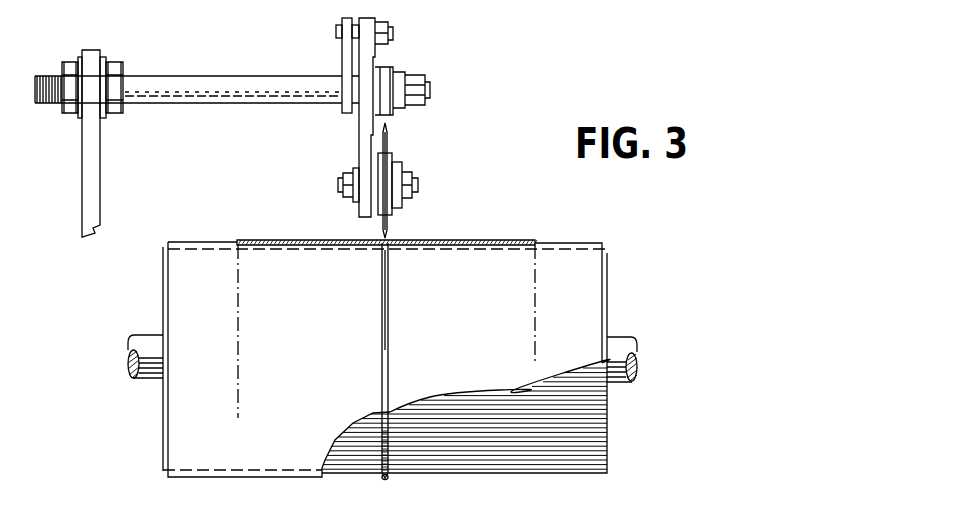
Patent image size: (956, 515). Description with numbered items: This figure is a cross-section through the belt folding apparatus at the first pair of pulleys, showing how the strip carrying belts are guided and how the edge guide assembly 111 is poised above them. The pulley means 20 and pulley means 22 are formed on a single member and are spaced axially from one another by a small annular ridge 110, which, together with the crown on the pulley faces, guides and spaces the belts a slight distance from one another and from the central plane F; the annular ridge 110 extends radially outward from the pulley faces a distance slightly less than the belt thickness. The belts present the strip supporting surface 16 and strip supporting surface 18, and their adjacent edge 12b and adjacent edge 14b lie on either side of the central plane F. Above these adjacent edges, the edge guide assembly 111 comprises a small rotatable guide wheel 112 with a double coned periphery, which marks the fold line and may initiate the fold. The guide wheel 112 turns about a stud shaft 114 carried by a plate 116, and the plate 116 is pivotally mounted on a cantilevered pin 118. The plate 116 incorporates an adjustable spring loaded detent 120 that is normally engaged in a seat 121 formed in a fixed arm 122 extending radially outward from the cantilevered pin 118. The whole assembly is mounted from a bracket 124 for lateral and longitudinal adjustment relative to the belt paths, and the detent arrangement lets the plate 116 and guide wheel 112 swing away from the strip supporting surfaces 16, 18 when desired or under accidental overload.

The cantilevered pin 118 is at (207, 75).
The bracket 124 is at (100, 190).
The fixed arm 122 is at (342, 27).
The seat 121 is at (352, 34).
The adjustable spring loaded detent 120 is at (366, 31).
The plate 116 is at (359, 143).
The edge guide assembly 111 is at (420, 72).
The guide wheel 112 is at (390, 140).
The stud shaft 114 is at (418, 182).
The strip supporting surface 18 is at (215, 242).
The pulley means 22 is at (165, 271).
The strip supporting surface 16 is at (565, 243).
The pulley means 20 is at (607, 285).
The adjacent edge 14b is at (382, 368).
The adjacent edge 12b is at (389, 366).
The central plane F is at (388, 300).
The annular ridge 110 is at (386, 479).